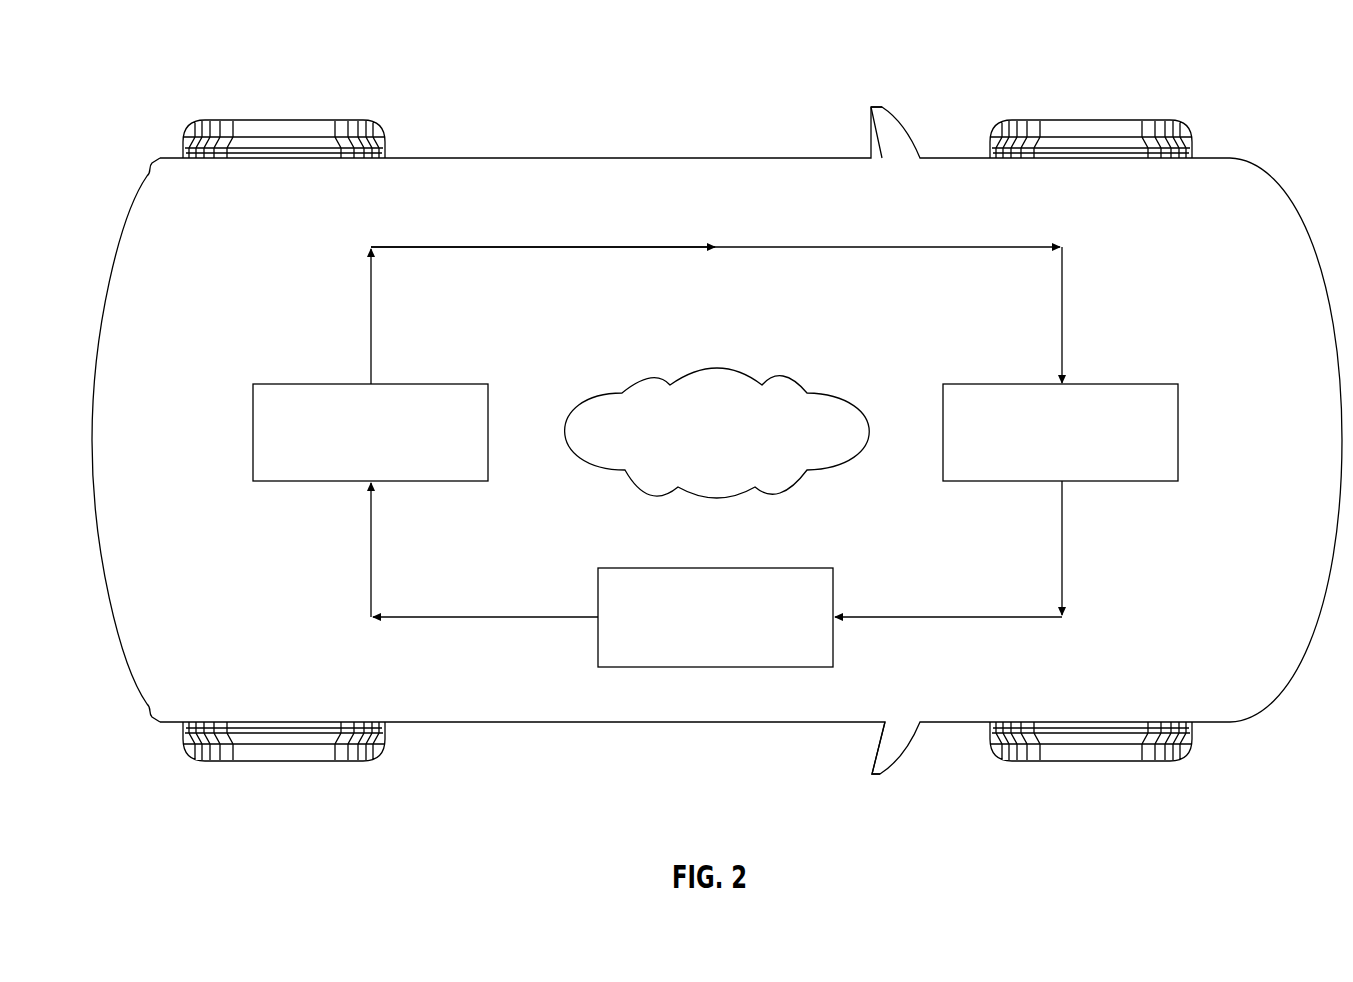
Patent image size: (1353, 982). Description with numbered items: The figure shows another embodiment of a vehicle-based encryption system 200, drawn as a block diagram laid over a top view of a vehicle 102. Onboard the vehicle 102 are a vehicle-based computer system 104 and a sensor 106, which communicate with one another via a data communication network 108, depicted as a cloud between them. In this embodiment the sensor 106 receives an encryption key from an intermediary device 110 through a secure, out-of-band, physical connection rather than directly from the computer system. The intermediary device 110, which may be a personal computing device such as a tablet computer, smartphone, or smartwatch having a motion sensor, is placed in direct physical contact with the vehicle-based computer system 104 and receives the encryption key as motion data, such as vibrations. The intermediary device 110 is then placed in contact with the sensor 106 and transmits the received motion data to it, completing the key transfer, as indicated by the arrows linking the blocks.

The vehicle-based encryption system 200 is at (138, 68).
The vehicle 102 is at (1206, 158).
The vehicle-based computer system 104 is at (968, 384).
The sensor 106 is at (280, 384).
The data communication network 108 is at (602, 394).
The intermediary device 110 is at (627, 568).